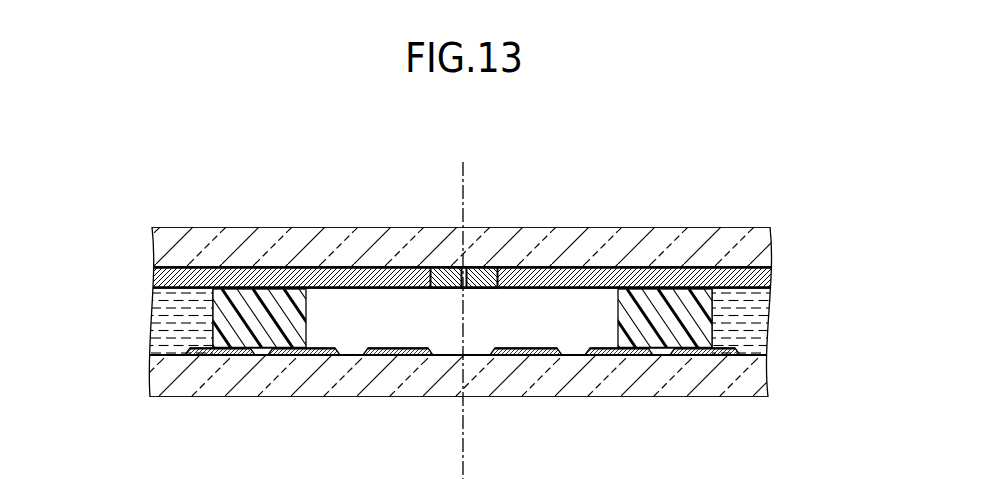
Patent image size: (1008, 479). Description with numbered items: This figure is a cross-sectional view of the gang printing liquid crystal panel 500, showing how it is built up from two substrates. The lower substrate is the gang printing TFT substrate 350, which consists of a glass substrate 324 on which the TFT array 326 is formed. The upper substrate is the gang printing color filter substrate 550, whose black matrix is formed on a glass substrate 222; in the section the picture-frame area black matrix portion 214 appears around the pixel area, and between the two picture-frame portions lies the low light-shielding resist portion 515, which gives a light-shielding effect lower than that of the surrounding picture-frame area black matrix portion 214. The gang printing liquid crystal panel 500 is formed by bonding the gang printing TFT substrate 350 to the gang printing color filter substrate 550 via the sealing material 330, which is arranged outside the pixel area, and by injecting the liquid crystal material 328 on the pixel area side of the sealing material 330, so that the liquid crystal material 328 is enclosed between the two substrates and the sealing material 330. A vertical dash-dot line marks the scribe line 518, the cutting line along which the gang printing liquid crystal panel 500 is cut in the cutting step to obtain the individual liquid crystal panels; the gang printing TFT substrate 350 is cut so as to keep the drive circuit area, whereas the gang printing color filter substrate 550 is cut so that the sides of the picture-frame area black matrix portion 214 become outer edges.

The gang printing liquid crystal panel 500 is at (634, 127).
The scribe line 518 is at (464, 173).
The low light-shielding resist portion 515 is at (441, 268).
The picture-frame area black matrix portion 214 is at (258, 278).
The glass substrate 222 is at (598, 243).
The gang printing color filter substrate 550 is at (120, 267).
The gang printing TFT substrate 350 is at (120, 377).
The liquid crystal material 328 is at (757, 305).
The sealing material 330 is at (687, 333).
The TFT array 326 is at (523, 357).
The glass substrate 324 is at (612, 382).